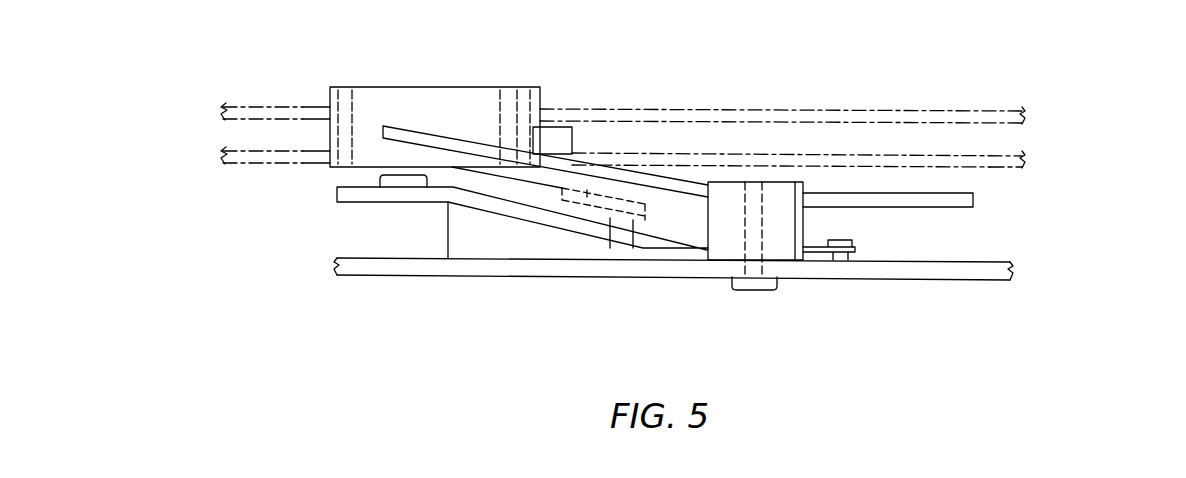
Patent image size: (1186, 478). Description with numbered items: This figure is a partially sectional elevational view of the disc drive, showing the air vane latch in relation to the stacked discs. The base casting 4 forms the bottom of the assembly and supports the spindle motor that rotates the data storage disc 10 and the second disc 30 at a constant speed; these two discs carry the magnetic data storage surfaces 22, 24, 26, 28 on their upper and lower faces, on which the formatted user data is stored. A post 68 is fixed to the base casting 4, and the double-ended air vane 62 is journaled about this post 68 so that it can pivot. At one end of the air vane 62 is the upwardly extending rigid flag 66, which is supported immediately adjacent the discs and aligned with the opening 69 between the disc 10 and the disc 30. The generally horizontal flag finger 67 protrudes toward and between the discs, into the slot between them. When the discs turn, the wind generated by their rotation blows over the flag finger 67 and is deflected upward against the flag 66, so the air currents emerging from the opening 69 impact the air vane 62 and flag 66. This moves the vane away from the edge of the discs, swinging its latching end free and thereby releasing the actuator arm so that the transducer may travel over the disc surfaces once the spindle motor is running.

The base casting 4 is at (933, 281).
The data storage disc 10 is at (802, 158).
The disc surface 22 is at (928, 110).
The disc surface 24 is at (947, 125).
The disc surface 26 is at (1005, 156).
The disc surface 28 is at (1008, 168).
The disc 30 is at (977, 168).
The air vane 62 is at (537, 181).
The flag 66 is at (478, 95).
The flag finger 67 is at (548, 137).
The post 68 is at (782, 213).
The opening 69 is at (303, 132).